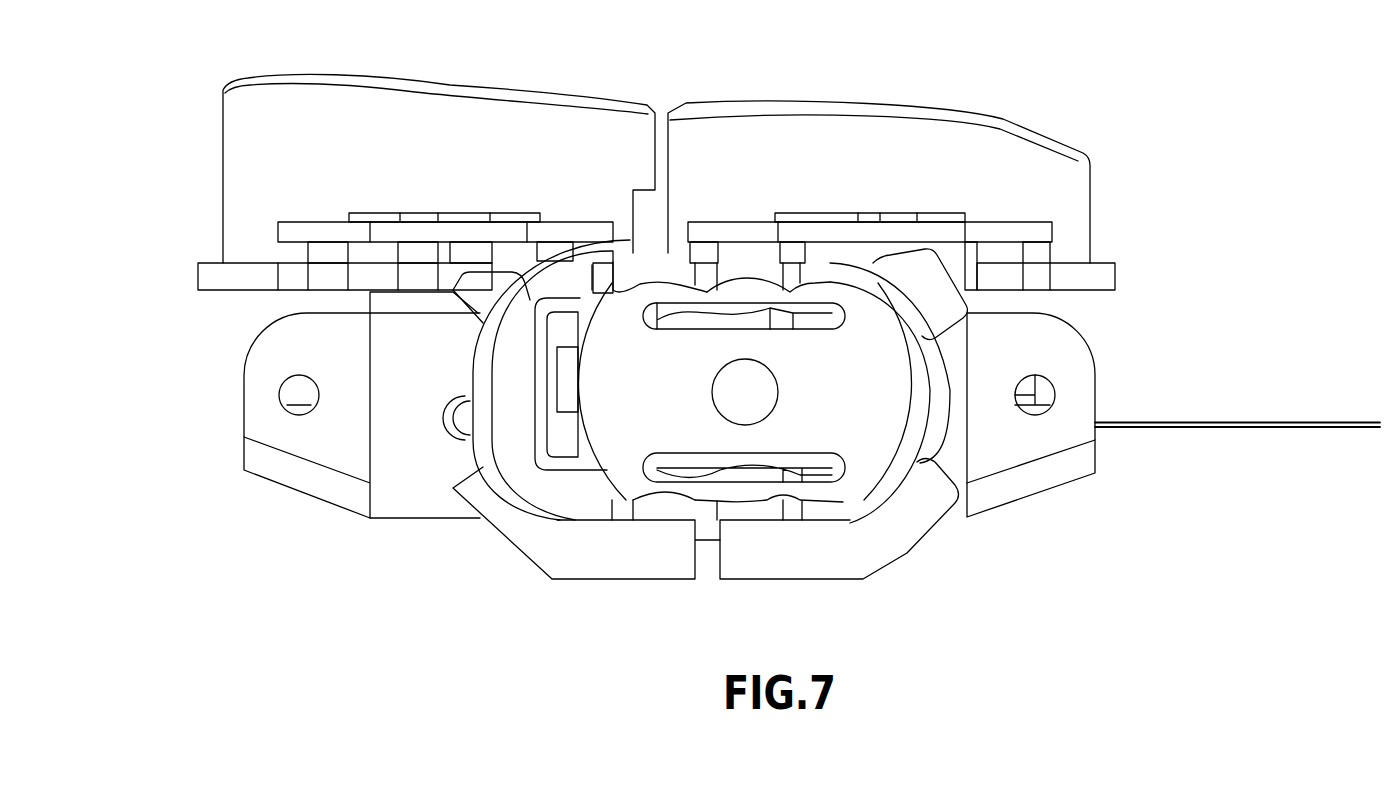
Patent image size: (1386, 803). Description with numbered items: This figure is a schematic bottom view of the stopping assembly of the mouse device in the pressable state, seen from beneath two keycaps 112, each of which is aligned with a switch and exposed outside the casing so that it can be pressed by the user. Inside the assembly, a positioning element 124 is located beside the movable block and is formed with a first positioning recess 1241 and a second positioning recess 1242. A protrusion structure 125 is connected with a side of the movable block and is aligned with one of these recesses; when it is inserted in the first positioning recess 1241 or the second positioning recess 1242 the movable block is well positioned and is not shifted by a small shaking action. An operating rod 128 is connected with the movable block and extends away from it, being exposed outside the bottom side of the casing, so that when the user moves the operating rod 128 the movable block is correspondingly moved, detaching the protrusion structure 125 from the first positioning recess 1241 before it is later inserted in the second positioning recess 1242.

The keycap 112 is at (430, 117).
The positioning element 124 is at (890, 543).
The protrusion structure 125 is at (742, 292).
The operating rod 128 is at (758, 393).
The first positioning recess 1241 is at (774, 278).
The second positioning recess 1242 is at (632, 272).